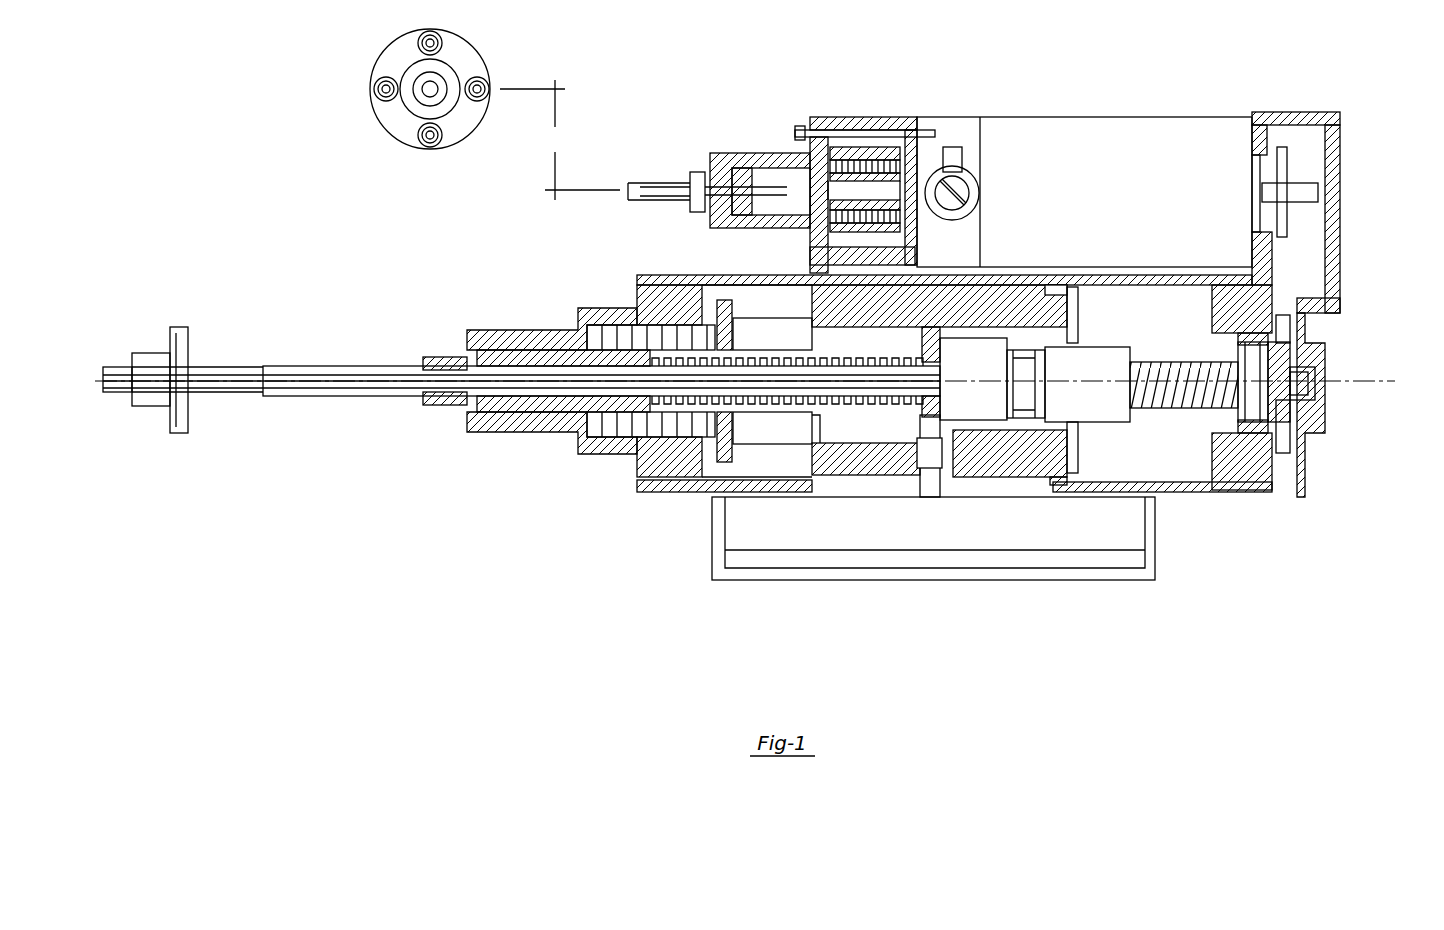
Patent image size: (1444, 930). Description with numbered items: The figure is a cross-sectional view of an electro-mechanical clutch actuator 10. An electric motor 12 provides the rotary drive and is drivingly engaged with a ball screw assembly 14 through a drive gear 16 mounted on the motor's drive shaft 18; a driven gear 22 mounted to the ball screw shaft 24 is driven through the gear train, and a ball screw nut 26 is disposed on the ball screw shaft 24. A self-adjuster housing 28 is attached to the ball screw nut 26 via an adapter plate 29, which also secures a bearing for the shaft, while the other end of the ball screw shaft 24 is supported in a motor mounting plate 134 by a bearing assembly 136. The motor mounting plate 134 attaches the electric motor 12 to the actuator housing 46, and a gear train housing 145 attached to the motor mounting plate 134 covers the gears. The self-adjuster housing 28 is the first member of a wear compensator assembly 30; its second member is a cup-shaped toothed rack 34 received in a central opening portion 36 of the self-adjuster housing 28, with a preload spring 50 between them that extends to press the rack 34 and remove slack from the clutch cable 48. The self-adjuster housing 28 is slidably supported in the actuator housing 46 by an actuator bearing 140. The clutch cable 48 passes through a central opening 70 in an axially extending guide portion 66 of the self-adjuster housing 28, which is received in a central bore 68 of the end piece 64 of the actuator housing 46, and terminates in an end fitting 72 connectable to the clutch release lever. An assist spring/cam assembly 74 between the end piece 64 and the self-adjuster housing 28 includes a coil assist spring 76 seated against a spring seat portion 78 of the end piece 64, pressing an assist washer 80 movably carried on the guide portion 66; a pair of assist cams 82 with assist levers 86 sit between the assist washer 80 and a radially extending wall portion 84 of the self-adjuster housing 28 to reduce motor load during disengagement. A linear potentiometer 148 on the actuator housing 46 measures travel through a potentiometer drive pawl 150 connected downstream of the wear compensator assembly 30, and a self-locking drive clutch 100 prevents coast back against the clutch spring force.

The electro-mechanical clutch actuator 10 is at (615, 578).
The electric motor 12 is at (1115, 135).
The ball screw assembly 14 is at (1142, 442).
The drive gear 16 is at (1282, 172).
The drive shaft 18 is at (1305, 192).
The driven gear 22 is at (1282, 427).
The ball screw shaft 24 is at (1225, 478).
The ball screw nut 26 is at (1100, 362).
The self-adjuster housing 28 is at (935, 478).
The adapter plate 29 is at (1072, 432).
The wear compensator assembly 30 is at (975, 527).
The rack 34 is at (985, 440).
The central opening portion 36 is at (875, 325).
The actuator housing 46 is at (667, 487).
The clutch cable 48 is at (315, 366).
The preload spring 50 is at (880, 404).
The end piece 64 is at (507, 437).
The axially extending guide portion 66 is at (547, 412).
The central bore 68 is at (510, 356).
The central opening 70 is at (490, 370).
The end fitting 72 is at (176, 348).
The assist spring/cam assembly 74 is at (735, 297).
The assist spring 76 is at (607, 330).
The spring seat portion 78 is at (600, 437).
The assist washer 80 is at (722, 487).
The assist cams 82 is at (760, 440).
The radially extending wall portion 84 is at (800, 460).
The assist lever 86 is at (762, 330).
The self-locking drive clutch 100 is at (862, 107).
The motor mounting plate 134 is at (1258, 470).
The bearing assembly 136 is at (1023, 400).
The actuator bearing 140 is at (1052, 293).
The gear train housing 145 is at (1330, 262).
The linear potentiometer 148 is at (1025, 535).
The potentiometer drive pawl 150 is at (908, 462).